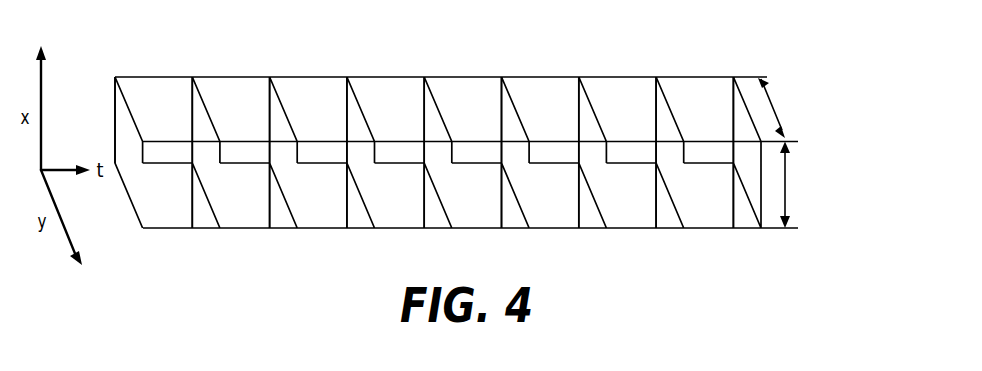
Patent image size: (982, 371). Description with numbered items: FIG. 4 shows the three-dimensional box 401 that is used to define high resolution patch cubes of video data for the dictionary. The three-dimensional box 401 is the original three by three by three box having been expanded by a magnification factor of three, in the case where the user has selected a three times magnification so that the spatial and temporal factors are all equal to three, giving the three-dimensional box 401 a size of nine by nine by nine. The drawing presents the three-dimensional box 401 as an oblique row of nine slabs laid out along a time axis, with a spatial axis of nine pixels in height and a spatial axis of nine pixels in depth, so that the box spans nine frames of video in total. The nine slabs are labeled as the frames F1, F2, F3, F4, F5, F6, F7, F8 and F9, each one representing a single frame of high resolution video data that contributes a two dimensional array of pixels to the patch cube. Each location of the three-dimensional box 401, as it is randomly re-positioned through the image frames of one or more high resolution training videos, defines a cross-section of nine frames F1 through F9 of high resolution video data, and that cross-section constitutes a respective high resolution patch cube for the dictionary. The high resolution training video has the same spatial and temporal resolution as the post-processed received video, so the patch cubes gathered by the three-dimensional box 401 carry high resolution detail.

The 3D box 401 is at (478, 133).
The frame F1 is at (123, 95).
The frame F2 is at (200, 95).
The frame F3 is at (277, 95).
The frame F4 is at (355, 95).
The frame F5 is at (432, 95).
The frame F6 is at (509, 95).
The frame F7 is at (587, 95).
The frame F8 is at (664, 95).
The frame F9 is at (741, 95).